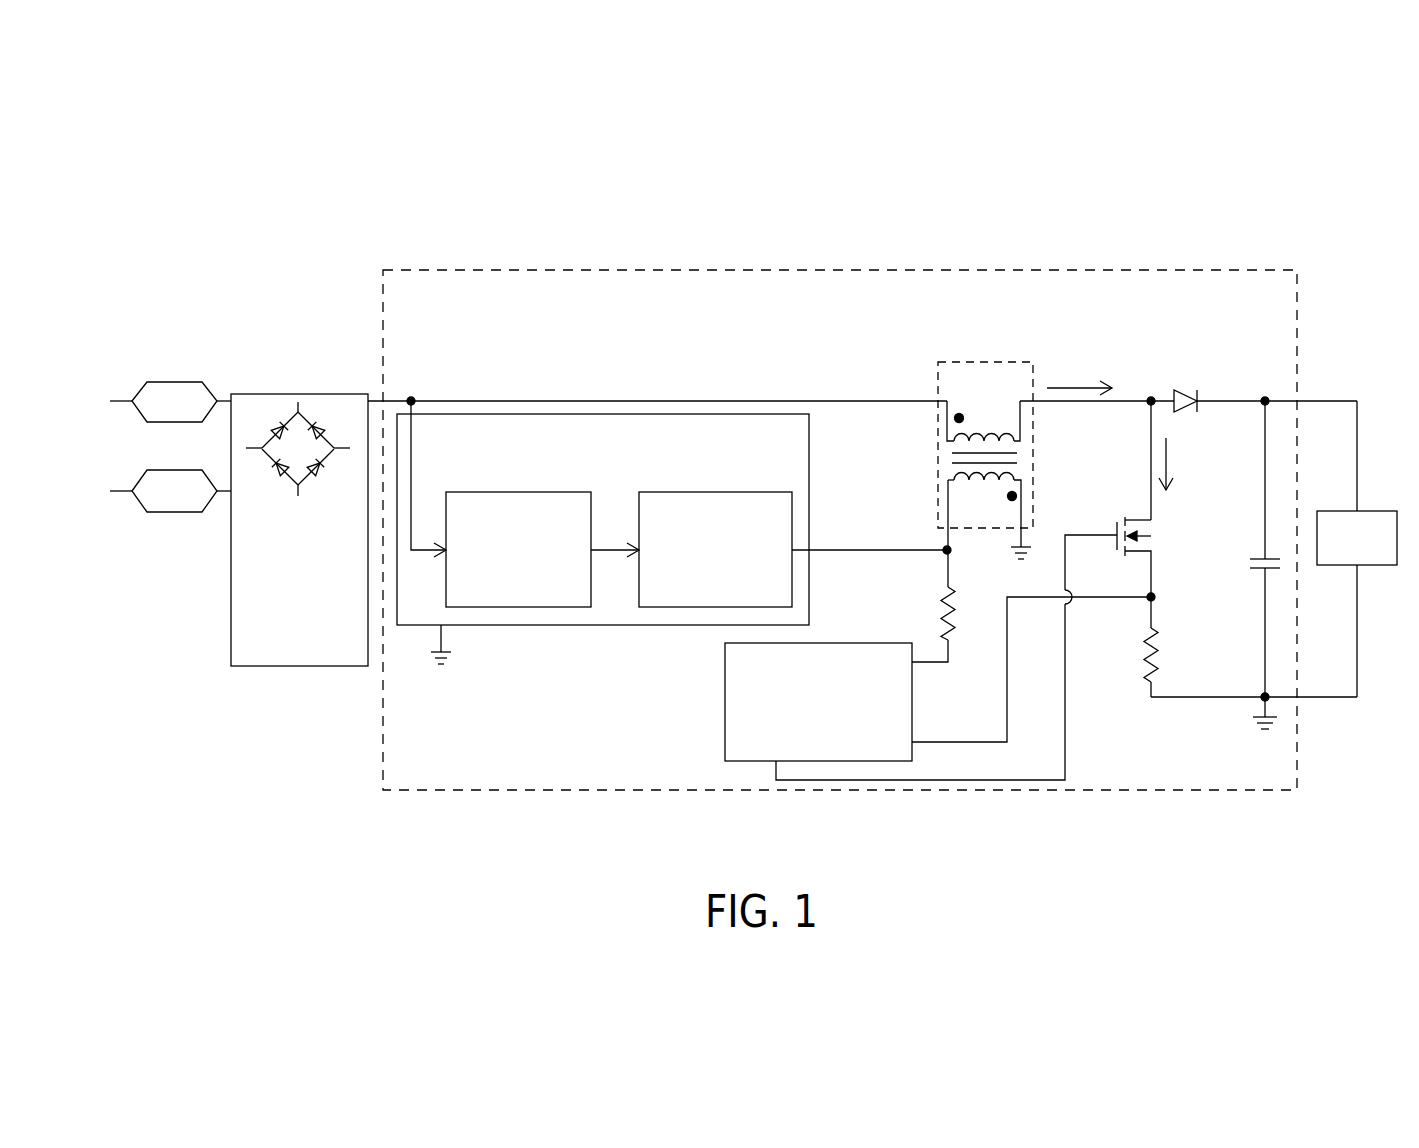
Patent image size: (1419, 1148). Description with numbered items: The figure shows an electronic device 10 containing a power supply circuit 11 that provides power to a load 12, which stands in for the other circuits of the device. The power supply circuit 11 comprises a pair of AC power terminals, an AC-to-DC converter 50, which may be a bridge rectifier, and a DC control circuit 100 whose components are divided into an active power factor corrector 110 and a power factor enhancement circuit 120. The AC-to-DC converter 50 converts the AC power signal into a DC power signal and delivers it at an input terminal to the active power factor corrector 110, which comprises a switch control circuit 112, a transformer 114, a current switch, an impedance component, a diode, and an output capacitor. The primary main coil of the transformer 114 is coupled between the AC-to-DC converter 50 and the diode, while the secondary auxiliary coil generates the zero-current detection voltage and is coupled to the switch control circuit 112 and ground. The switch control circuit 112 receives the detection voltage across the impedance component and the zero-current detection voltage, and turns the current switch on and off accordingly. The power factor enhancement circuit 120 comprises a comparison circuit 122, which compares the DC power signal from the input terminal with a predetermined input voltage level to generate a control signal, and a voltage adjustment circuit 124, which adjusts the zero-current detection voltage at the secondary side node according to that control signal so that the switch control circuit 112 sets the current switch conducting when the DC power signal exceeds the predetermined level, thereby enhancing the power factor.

The electronic device 10 is at (284, 158).
The power supply circuit 11 is at (1288, 247).
The AC-to-DC converter 50 is at (297, 666).
The DC control circuit 100 is at (865, 790).
The power factor enhancement circuit 120 is at (591, 625).
The comparison circuit 122 is at (517, 607).
The voltage adjustment circuit 124 is at (655, 607).
The active power factor corrector 110 is at (805, 350).
The transformer 114 is at (938, 445).
The switch control circuit 112 is at (848, 643).
The load 12 is at (1383, 565).